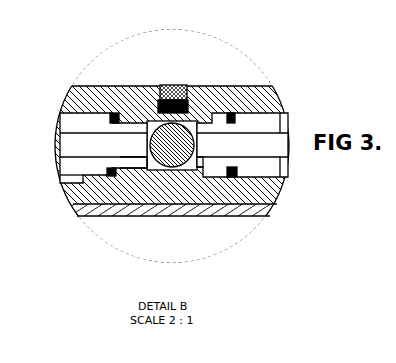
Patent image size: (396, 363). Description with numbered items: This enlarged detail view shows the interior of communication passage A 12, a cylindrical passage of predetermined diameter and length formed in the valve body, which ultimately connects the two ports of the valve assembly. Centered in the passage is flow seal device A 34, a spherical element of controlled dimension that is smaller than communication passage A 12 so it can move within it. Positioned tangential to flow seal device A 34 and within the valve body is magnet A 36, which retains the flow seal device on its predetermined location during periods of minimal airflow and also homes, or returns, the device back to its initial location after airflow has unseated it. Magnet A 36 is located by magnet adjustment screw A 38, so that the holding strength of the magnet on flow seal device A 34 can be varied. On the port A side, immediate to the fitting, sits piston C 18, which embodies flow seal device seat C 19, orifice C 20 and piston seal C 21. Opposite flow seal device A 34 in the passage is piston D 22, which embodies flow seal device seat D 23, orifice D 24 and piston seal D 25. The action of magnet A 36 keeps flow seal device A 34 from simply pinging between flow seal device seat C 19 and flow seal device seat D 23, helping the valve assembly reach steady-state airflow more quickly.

The communication passage A 12 is at (152, 122).
The piston C 18 is at (268, 117).
The flow seal device seat C 19 is at (199, 166).
The orifice C 20 is at (214, 120).
The piston seal C 21 is at (233, 180).
The piston D 22 is at (72, 113).
The flow seal device seat D 23 is at (136, 166).
The orifice D 24 is at (125, 115).
The piston seal D 25 is at (103, 180).
The flow seal device A 34 is at (165, 162).
The magnet A 36 is at (188, 103).
The magnet adjustment screw A 38 is at (168, 84).